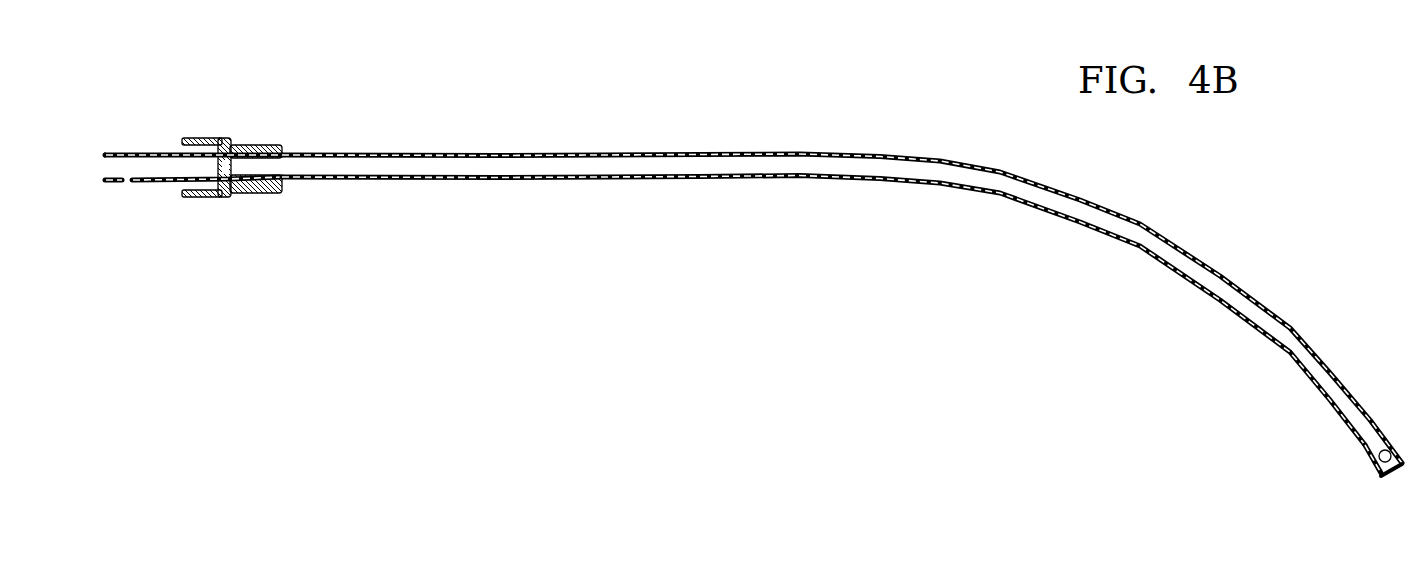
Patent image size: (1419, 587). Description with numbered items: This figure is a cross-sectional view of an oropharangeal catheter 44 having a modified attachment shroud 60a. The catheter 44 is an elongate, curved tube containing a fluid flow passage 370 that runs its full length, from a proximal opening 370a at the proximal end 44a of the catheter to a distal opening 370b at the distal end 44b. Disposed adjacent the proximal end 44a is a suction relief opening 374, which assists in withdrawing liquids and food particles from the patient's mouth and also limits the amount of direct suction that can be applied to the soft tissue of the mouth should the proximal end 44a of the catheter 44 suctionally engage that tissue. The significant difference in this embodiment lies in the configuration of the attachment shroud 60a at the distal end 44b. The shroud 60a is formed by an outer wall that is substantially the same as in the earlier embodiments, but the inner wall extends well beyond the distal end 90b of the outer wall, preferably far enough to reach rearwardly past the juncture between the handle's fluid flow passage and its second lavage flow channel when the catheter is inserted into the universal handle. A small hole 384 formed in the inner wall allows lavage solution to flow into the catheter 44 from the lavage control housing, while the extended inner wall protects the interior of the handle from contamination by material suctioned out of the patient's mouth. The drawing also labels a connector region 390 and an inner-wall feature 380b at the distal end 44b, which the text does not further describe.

The oropharangeal catheter 44 is at (840, 152).
The proximal end of the catheter 44a is at (1381, 474).
The distal end of the catheter 44b is at (157, 152).
The fluid flow passage 370 is at (563, 168).
The proximal opening 370a is at (1398, 470).
The distal opening 370b is at (112, 165).
The suction relief opening 374 is at (1383, 450).
The proximal opening 380b is at (107, 152).
The small hole 384 is at (121, 185).
The connector 390 is at (220, 138).
The attachment shroud 60a is at (189, 138).
The distal end of the outer wall 90b is at (188, 197).